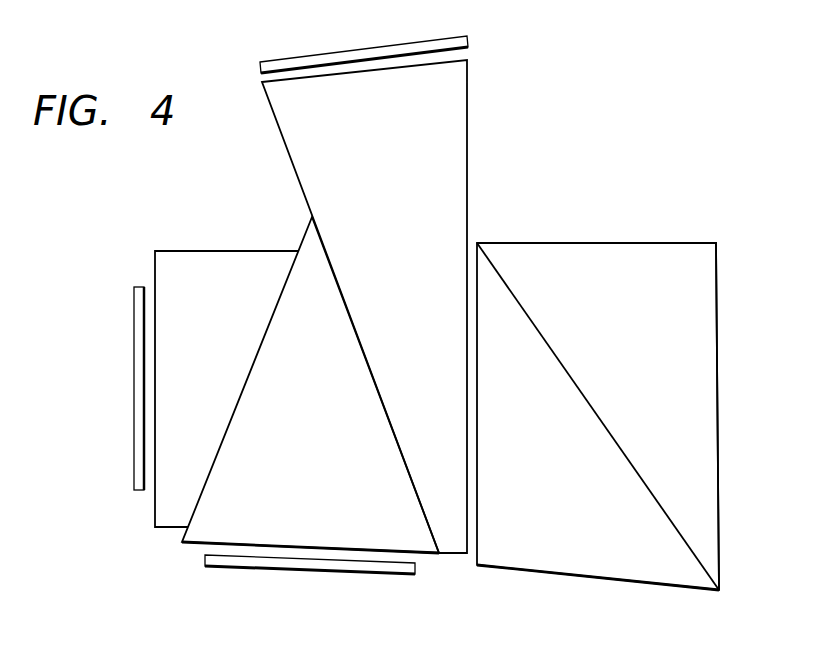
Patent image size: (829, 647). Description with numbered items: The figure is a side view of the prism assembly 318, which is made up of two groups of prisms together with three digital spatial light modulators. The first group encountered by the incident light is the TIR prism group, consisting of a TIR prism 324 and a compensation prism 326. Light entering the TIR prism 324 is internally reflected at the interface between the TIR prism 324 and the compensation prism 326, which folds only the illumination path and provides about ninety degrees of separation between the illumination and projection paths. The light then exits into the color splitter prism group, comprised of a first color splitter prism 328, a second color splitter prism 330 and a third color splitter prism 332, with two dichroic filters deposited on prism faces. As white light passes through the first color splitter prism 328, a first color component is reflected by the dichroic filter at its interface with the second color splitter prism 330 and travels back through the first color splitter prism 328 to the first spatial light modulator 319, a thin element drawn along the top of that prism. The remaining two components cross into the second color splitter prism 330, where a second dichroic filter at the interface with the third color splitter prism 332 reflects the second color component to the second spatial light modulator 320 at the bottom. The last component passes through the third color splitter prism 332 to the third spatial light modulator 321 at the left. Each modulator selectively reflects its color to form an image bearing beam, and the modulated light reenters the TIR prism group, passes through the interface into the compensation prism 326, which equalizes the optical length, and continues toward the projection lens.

The prism assembly 318 is at (556, 146).
The first spatial light modulator 319 is at (320, 53).
The second spatial light modulator 320 is at (272, 572).
The third spatial light modulator 321 is at (133, 397).
The TIR prism 324 is at (540, 512).
The compensation prism 326 is at (612, 329).
The first color splitter prism 328 is at (369, 192).
The second color splitter prism 330 is at (295, 454).
The third color splitter prism 332 is at (203, 251).